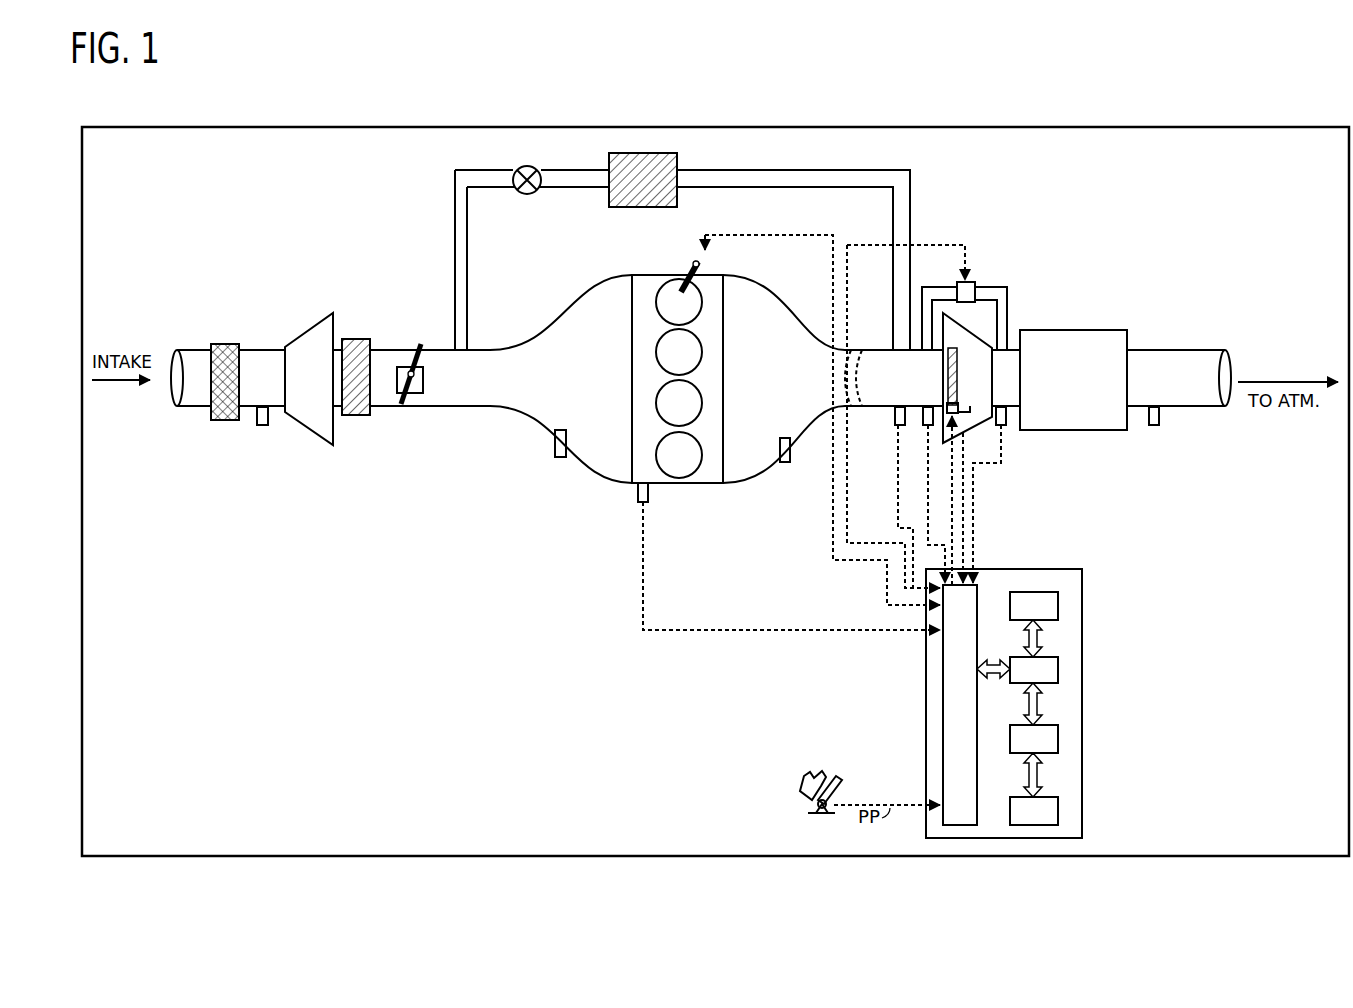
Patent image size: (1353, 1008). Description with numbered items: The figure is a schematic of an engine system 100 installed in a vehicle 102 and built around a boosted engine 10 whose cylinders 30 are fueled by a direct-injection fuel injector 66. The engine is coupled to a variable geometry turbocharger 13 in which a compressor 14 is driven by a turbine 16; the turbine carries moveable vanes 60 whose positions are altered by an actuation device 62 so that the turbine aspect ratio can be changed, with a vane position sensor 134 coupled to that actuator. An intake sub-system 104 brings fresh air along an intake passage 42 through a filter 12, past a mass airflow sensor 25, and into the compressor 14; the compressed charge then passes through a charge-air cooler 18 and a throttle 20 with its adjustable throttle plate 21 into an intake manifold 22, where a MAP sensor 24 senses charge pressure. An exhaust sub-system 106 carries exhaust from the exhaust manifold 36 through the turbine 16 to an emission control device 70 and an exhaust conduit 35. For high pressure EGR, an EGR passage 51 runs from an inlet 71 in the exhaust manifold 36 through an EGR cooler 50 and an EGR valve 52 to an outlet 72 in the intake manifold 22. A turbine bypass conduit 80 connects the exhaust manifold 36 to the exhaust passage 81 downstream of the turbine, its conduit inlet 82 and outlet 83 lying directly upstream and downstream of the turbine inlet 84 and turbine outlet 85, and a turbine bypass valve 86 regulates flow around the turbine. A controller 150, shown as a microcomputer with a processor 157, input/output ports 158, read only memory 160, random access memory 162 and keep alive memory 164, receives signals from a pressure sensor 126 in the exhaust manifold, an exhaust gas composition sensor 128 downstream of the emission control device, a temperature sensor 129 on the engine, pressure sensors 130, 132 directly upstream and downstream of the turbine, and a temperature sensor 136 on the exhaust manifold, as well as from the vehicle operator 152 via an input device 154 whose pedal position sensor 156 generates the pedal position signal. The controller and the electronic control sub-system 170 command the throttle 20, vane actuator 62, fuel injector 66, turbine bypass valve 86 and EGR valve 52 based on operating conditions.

The engine system 100 is at (1270, 180).
The vehicle 102 is at (123, 126).
The intake sub-system 104 is at (250, 275).
The exhaust sub-system 106 is at (1124, 249).
The engine 10 is at (712, 275).
The filter 12 is at (224, 344).
The turbocharger 13 is at (304, 318).
The compressor 14 is at (309, 379).
The turbine 16 is at (963, 330).
The charge-air cooler 18 is at (358, 339).
The throttle 20 is at (423, 388).
The throttle plate 21 is at (422, 345).
The intake manifold 22 is at (561, 379).
The manifold air pressure (MAP) sensor 24 is at (555, 438).
The mass airflow sensor (MAF) 25 is at (257, 419).
The cylinders 30 is at (700, 297).
The exhaust conduit 35 is at (1205, 349).
The exhaust manifold 36 is at (792, 379).
The intake passage 42 is at (200, 410).
The EGR cooler 50 is at (652, 153).
The EGR passage 51 is at (787, 170).
The EGR valve 52 is at (537, 166).
The vanes 60 is at (957, 370).
The actuation device 62 is at (957, 395).
The fuel injector 66 is at (684, 275).
The emission control device 70 is at (1058, 330).
The inlet 71 is at (903, 358).
The outlet 72 is at (466, 357).
The turbine bypass conduit 80 is at (930, 287).
The exhaust passage 81 is at (1030, 392).
The conduit inlet 82 is at (928, 358).
The conduit outlet 83 is at (998, 357).
The turbine inlet 84 is at (939, 378).
The turbine outlet 85 is at (1032, 405).
The turbine bypass valve 86 is at (972, 282).
The pressure sensor 126 is at (790, 445).
The exhaust gas composition sensor 128 is at (1154, 425).
The temperature sensor 129 is at (638, 494).
The pressure sensor 130 is at (923, 428).
The pressure sensor 132 is at (996, 425).
The vane position sensor 134 is at (966, 393).
The temperature sensor 136 is at (895, 413).
The controller 150 is at (1076, 569).
The vehicle operator 152 is at (800, 783).
The input device 154 is at (832, 798).
The pedal position sensor 156 is at (802, 805).
The processor 157 is at (1060, 666).
The input/output ports 158 is at (980, 590).
The read only memory 160 is at (1060, 602).
The random access memory 162 is at (1060, 738).
The keep alive memory 164 is at (1060, 808).
The electronic control sub-system 170 is at (1162, 762).